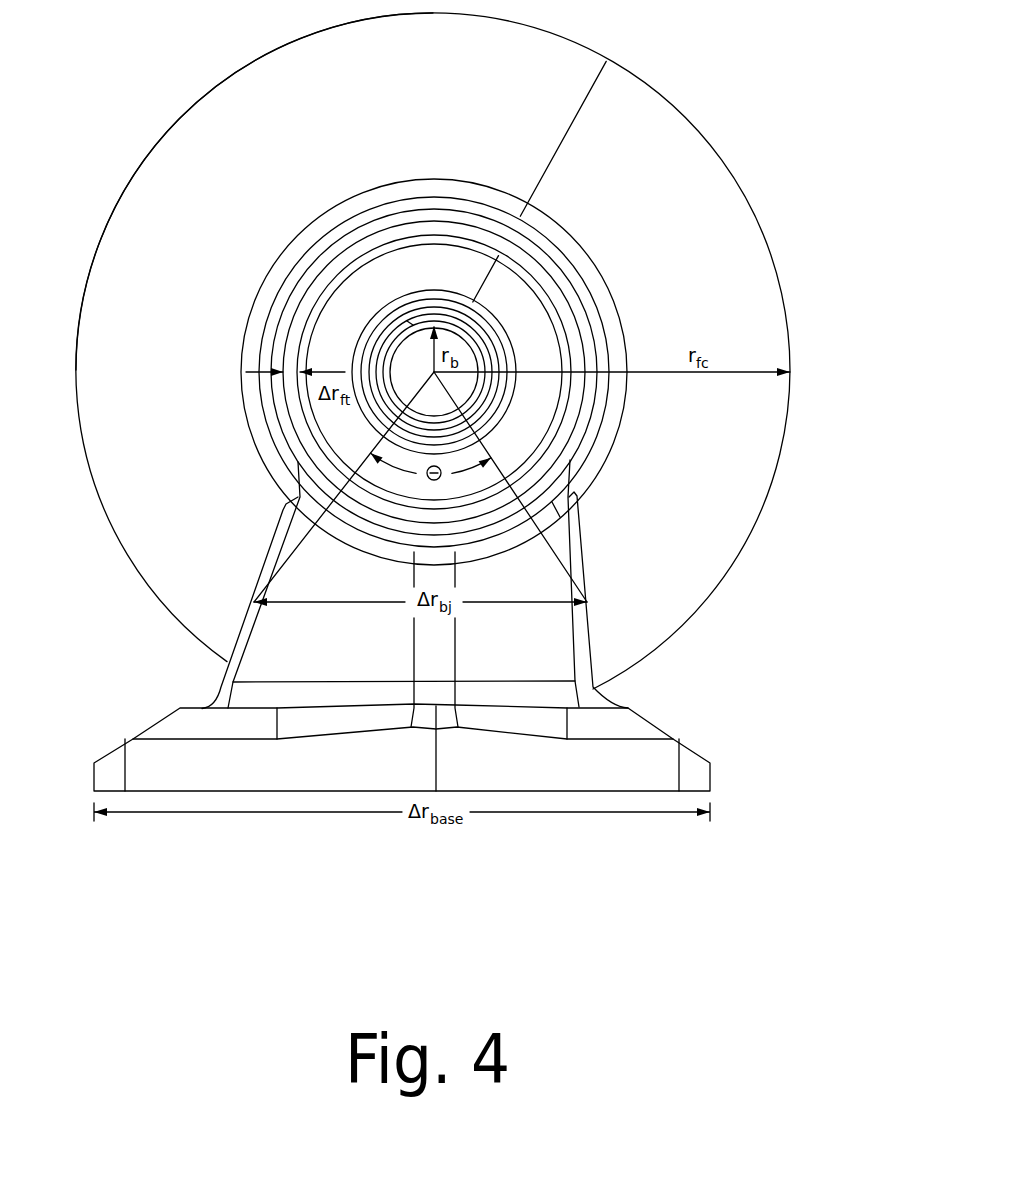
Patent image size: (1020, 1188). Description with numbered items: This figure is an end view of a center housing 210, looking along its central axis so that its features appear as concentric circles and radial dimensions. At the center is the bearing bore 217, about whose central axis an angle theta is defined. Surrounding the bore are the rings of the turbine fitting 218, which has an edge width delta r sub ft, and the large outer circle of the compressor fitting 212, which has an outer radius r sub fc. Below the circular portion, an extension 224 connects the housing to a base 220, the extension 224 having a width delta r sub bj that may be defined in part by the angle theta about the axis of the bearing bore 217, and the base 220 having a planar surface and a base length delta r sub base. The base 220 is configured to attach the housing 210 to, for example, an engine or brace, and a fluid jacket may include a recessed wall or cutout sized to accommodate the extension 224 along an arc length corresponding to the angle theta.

The housing 210 is at (247, 98).
The compressor fitting 212 is at (180, 118).
The bearing bore 217 is at (398, 338).
The turbine fitting 218 is at (300, 320).
The base 220 is at (657, 727).
The extension 224 is at (356, 646).